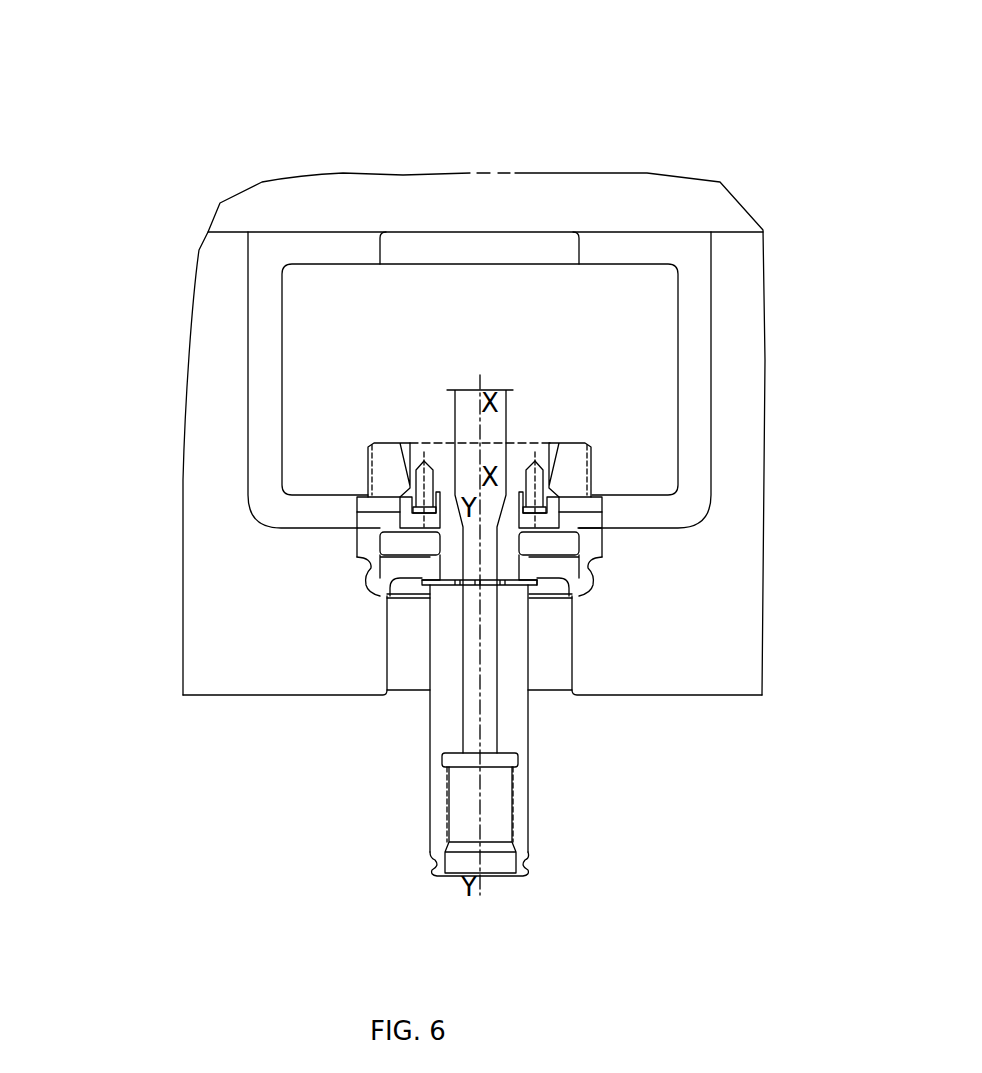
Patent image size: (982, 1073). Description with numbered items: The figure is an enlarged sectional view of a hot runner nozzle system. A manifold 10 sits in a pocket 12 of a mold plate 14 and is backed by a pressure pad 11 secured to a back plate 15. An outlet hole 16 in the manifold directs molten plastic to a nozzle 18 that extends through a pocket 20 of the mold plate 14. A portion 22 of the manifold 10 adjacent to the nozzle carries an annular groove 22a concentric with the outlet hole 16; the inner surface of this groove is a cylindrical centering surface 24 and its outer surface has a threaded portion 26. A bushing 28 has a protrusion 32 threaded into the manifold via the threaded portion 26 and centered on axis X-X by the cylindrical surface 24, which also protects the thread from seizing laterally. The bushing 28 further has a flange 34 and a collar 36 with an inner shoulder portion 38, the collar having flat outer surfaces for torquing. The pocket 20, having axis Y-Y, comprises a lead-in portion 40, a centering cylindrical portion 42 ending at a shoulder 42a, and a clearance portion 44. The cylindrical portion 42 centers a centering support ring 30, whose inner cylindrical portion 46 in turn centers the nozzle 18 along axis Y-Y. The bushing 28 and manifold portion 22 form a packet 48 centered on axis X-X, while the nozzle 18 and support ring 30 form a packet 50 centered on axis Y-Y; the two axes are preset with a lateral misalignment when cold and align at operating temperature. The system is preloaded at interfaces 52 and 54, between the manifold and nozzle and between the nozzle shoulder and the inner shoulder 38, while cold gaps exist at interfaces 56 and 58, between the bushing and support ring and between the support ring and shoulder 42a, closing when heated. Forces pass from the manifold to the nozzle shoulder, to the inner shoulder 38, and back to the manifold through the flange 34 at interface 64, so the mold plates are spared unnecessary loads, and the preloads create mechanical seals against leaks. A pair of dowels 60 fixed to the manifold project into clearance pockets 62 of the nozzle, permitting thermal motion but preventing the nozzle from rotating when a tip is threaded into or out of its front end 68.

The manifold 10 is at (582, 289).
The pressure pad 11 is at (517, 240).
The pocket 12 is at (693, 284).
The mold plate 14 is at (724, 279).
The back plate 15 is at (647, 205).
The outlet hole 16 is at (486, 422).
The nozzle 18 is at (440, 783).
The pocket 20 is at (545, 657).
The portion of manifold 22 is at (428, 437).
The annular groove 22a is at (553, 448).
The cylindrical centering surface 24 is at (586, 492).
The threaded portion 26 is at (548, 481).
The bushing 28 is at (382, 505).
The centering support ring 30 is at (379, 580).
The protrusion 32 is at (570, 463).
The flange 34 is at (595, 508).
The collar 36 is at (390, 523).
The inner shoulder portion 38 is at (415, 539).
The lead-in portion 40 is at (596, 579).
The centering cylindrical portion 42 is at (593, 596).
The shoulder 42a is at (581, 583).
The clearance portion 44 is at (572, 658).
The inner cylindrical portion 46 is at (540, 581).
The packet 48 is at (115, 458).
The packet 50 is at (115, 783).
The interface 52 is at (443, 497).
The interface 54 is at (417, 530).
The interface 56 is at (386, 557).
The interface 58 is at (378, 596).
The dowels 60 is at (603, 550).
The clearance pockets 62 is at (413, 503).
The interface 64 is at (597, 497).
The front end 68 is at (510, 885).